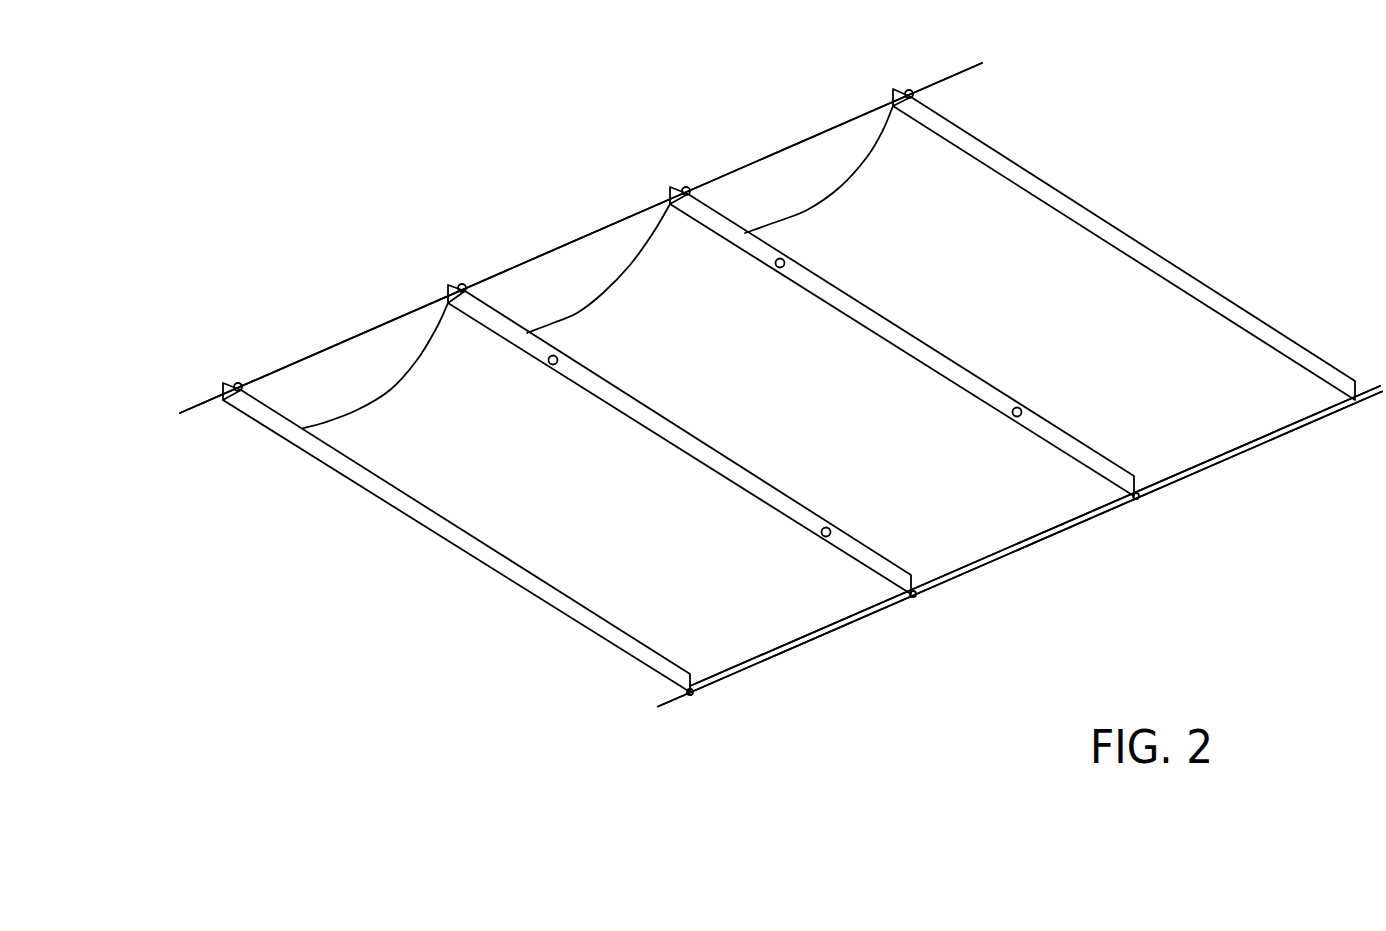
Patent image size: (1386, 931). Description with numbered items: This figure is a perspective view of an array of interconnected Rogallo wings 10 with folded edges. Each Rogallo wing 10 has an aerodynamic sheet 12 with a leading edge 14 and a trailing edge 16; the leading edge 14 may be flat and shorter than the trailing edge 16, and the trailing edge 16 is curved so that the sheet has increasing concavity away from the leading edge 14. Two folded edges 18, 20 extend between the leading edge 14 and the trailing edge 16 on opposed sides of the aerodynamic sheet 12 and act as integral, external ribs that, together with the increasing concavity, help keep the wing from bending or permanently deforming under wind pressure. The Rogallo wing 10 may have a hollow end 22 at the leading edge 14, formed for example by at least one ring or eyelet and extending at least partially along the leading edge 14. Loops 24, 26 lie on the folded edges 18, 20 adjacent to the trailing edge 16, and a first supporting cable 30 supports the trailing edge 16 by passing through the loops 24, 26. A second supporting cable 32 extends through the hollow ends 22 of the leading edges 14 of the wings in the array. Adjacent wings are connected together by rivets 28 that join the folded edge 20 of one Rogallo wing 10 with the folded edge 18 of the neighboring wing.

The Rogallo wing 10 is at (831, 649).
The aerodynamic sheet 12 is at (558, 474).
The leading edge 14 is at (1097, 518).
The trailing edge 16 is at (367, 397).
The folded edge 18 is at (470, 534).
The folded edge 20 is at (600, 377).
The hollow end 22 is at (697, 697).
The loop 24 is at (238, 383).
The loop 26 is at (462, 284).
The rivet 28 is at (553, 354).
The first supporting cable 30 is at (393, 321).
The second supporting cable 32 is at (663, 705).